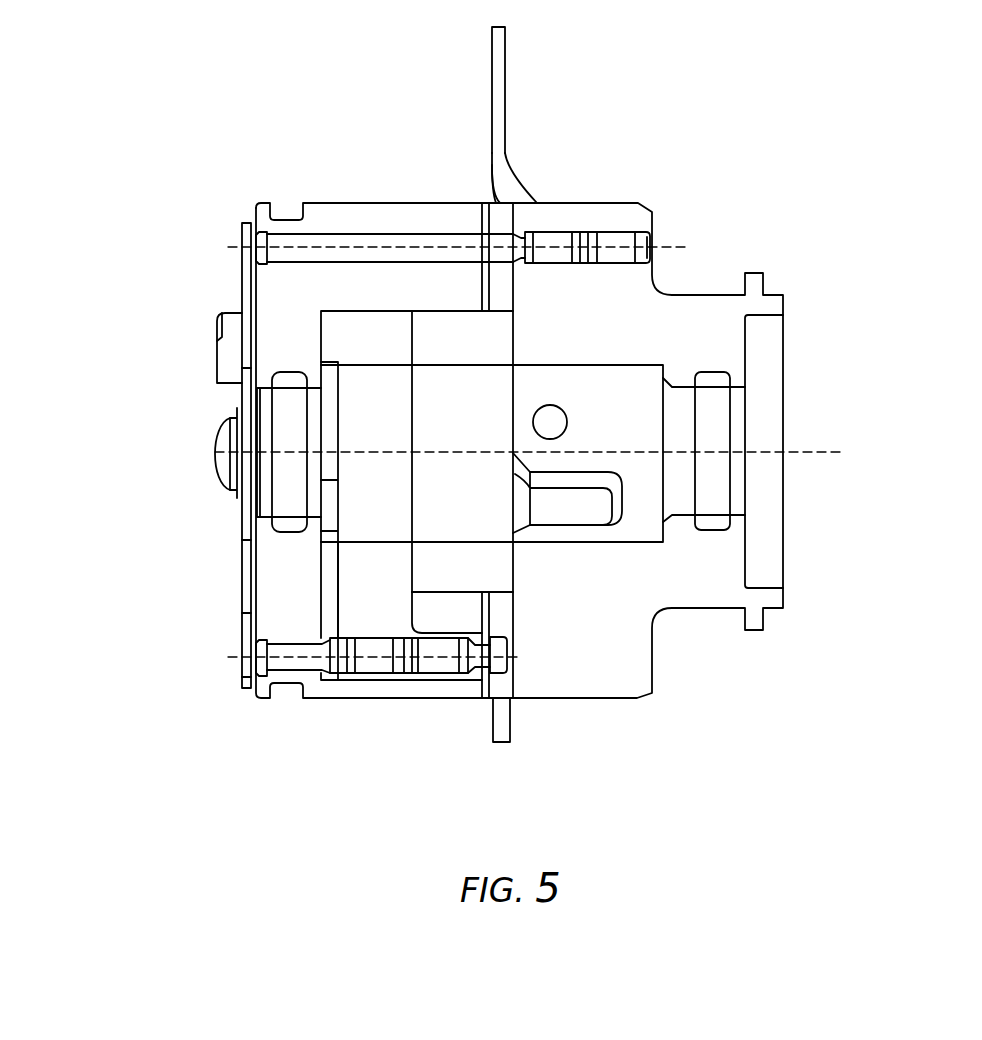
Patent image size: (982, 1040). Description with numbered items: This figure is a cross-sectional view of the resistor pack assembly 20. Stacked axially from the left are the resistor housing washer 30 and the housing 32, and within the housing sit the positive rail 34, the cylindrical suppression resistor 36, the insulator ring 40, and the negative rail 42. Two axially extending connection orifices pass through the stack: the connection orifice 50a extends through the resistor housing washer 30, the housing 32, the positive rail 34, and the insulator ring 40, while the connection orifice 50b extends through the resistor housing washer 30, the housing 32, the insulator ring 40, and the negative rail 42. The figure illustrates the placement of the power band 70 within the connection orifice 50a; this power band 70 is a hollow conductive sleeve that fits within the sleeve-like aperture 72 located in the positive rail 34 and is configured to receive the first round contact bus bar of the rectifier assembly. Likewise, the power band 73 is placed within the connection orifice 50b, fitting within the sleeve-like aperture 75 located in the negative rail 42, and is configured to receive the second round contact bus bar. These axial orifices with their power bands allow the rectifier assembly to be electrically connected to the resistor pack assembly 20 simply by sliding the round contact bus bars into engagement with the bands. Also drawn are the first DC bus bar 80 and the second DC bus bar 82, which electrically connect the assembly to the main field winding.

The resistor pack assembly 20 is at (121, 80).
The resistor housing washer 30 is at (247, 627).
The housing 32 is at (372, 217).
The positive rail 34 is at (345, 680).
The cylindrical suppression resistor 36 is at (463, 343).
The insulator ring 40 is at (505, 615).
The negative rail 42 is at (615, 688).
The connection orifice 50a is at (247, 677).
The connection orifice 50b is at (238, 258).
The power band 70 is at (388, 652).
The sleeve-like aperture 72 is at (473, 667).
The power band 73 is at (623, 240).
The sleeve-like aperture 75 is at (570, 232).
The first DC bus bar 80 is at (503, 733).
The second DC bus bar 82 is at (497, 67).